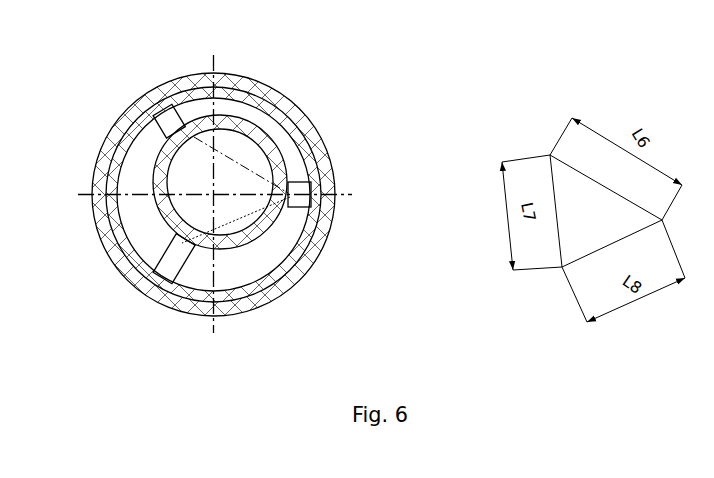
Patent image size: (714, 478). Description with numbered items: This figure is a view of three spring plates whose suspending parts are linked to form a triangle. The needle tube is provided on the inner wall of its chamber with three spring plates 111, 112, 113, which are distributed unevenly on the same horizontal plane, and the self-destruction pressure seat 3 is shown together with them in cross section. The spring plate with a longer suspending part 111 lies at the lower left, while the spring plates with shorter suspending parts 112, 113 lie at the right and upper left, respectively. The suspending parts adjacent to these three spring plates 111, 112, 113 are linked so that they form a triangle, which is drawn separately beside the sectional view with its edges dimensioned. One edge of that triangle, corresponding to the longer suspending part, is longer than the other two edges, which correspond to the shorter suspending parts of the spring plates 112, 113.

The self-destruction pressure seat 3 is at (245, 113).
The spring plate with a longer suspending part 111 is at (182, 250).
The spring plate with a shorter suspending part 112 is at (289, 182).
The spring plate with a shorter suspending part 113 is at (168, 114).